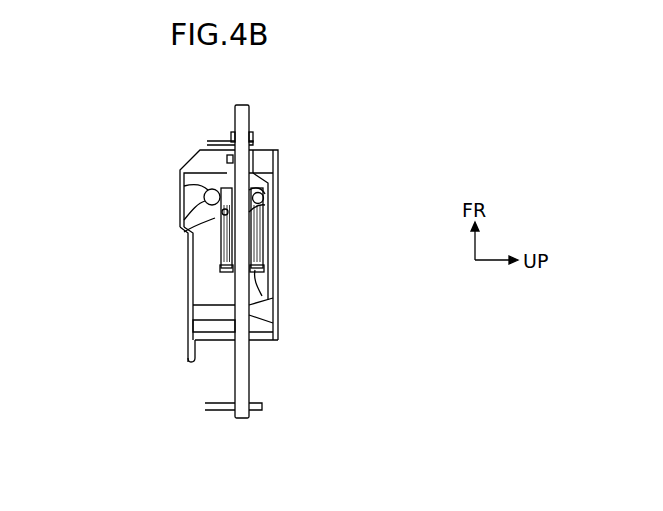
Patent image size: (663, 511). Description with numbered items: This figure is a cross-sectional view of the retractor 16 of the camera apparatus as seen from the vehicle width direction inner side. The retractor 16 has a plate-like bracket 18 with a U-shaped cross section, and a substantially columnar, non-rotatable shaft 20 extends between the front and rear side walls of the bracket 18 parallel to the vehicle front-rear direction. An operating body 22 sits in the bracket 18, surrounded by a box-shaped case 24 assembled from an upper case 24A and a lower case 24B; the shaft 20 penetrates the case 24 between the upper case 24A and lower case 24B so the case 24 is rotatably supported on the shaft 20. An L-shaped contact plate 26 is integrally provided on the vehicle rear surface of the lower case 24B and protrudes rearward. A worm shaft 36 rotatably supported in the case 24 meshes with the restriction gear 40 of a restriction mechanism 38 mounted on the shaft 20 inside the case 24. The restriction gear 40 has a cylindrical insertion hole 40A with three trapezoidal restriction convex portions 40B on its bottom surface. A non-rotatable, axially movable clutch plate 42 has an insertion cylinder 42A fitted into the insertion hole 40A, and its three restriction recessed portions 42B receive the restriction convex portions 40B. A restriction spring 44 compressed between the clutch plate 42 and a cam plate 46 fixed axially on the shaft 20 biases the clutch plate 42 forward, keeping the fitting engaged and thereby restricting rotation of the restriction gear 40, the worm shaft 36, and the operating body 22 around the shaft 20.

The retractor 16 is at (167, 141).
The bracket 18 is at (213, 141).
The shaft 20 is at (250, 375).
The operating body 22 is at (277, 152).
The case 24 is at (278, 340).
The upper case 24A is at (278, 268).
The lower case 24B is at (188, 314).
The contact plate 26 is at (187, 352).
The worm shaft 36 is at (204, 197).
The restriction mechanism 38 is at (218, 272).
The restriction gear 40 is at (264, 187).
The insertion hole 40A is at (190, 230).
The restriction convex portion 40B is at (265, 224).
The clutch plate 42 is at (192, 224).
The insertion cylinder 42A is at (205, 190).
The restriction recessed portion 42B is at (264, 198).
The restriction spring 44 is at (220, 255).
The cam plate 46 is at (273, 297).